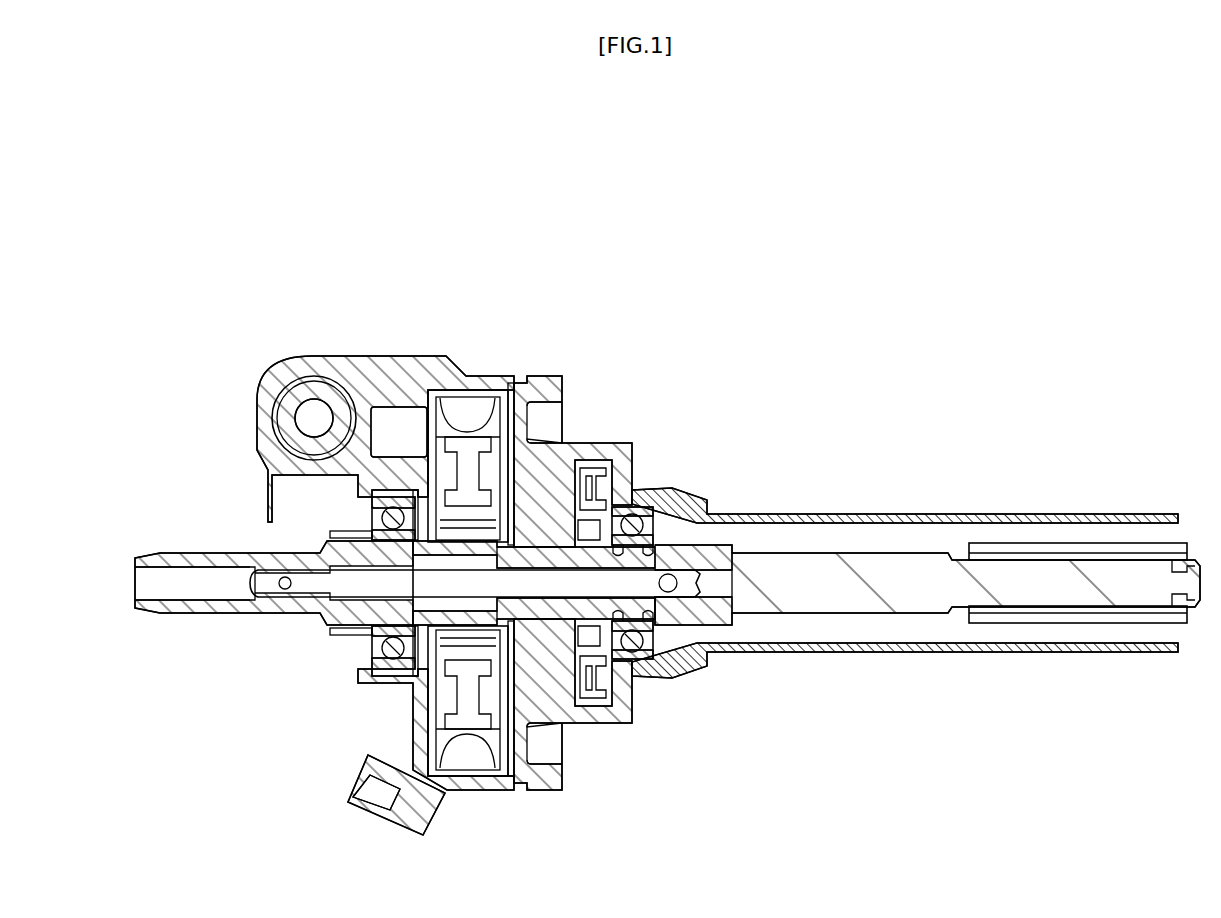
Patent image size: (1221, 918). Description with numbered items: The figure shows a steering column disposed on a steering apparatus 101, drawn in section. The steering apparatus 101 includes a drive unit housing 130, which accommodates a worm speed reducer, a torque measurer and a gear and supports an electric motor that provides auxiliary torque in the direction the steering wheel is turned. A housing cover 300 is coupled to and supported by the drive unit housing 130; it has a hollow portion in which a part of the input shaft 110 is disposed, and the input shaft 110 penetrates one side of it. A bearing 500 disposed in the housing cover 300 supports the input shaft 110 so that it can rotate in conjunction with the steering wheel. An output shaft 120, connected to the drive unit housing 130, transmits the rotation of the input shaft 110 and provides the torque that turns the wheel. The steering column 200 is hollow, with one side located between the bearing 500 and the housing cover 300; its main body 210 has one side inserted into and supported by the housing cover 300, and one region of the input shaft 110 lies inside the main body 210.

The steering apparatus 101 is at (878, 322).
The input shaft 110 is at (837, 588).
The output shaft 120 is at (273, 608).
The drive unit housing 130 is at (424, 345).
The steering column 200 is at (764, 687).
The main body 210 is at (951, 650).
The housing cover 300 is at (607, 720).
The bearing 500 is at (650, 510).